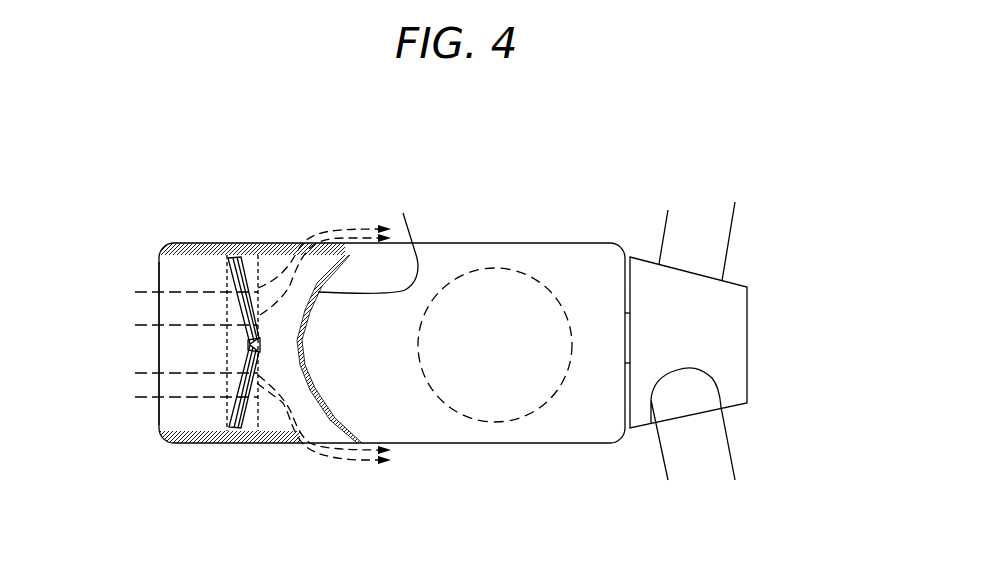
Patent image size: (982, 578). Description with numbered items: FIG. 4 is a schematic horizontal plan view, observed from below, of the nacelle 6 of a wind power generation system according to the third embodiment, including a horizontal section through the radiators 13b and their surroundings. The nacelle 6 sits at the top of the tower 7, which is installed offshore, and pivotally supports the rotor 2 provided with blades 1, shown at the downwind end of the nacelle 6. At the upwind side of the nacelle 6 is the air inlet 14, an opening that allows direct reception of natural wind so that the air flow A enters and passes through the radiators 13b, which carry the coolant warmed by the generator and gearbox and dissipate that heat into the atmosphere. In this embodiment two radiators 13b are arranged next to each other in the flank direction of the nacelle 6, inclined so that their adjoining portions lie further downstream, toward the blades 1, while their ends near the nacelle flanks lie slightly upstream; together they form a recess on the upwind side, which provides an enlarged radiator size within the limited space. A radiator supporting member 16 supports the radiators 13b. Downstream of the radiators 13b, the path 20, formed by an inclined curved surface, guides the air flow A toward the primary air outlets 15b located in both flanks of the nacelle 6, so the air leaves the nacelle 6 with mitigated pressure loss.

The blades 1 is at (730, 232).
The rotor 2 is at (750, 317).
The nacelle 6 is at (538, 243).
The tower 7 is at (500, 423).
The radiator 13b is at (232, 425).
The air inlet 14 is at (159, 275).
The air outlets 15b is at (290, 244).
The radiator supporting member 16 is at (256, 432).
The path 20 is at (403, 213).
The air flow A is at (176, 335).